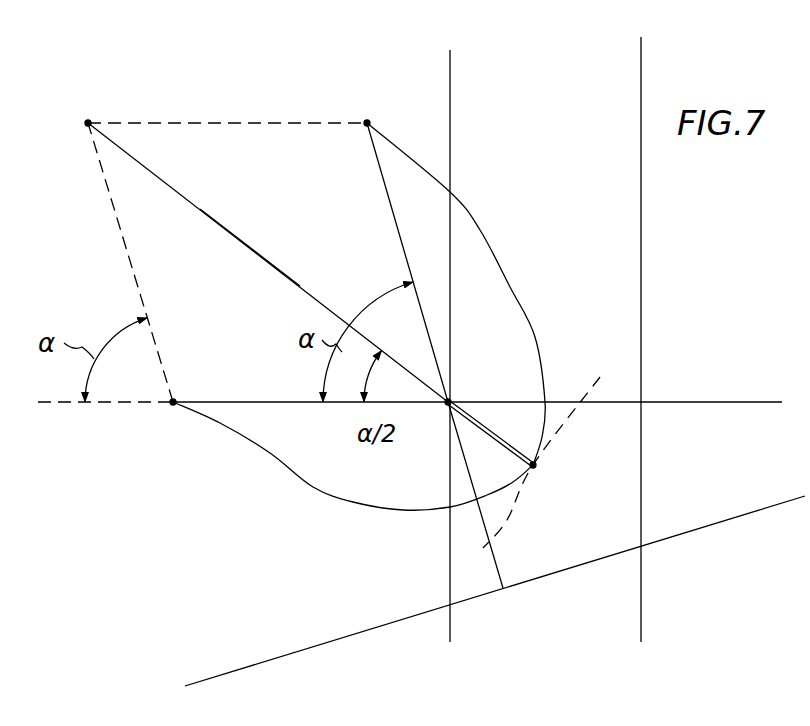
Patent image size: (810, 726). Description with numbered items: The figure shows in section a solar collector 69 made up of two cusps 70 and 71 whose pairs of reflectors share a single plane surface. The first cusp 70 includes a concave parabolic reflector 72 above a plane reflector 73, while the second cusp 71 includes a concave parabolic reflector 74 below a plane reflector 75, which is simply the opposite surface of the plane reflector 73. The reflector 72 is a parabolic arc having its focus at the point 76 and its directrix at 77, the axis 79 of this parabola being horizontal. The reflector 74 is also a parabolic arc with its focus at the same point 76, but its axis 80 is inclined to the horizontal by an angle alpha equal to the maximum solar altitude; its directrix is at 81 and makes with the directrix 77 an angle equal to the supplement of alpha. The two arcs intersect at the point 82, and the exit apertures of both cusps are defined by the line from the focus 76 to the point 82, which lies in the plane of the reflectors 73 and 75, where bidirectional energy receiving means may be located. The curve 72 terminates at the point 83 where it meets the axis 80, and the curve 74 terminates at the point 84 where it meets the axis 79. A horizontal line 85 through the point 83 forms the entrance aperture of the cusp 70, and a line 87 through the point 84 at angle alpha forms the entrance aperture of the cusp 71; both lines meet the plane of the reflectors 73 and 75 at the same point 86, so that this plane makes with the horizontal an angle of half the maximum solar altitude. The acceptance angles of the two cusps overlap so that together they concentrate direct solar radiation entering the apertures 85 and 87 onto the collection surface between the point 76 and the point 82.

The collector 69 is at (158, 77).
The cusp 70 is at (260, 147).
The cusp 71 is at (146, 242).
The concave parabolic reflector 72 is at (482, 232).
The plane reflector 73 is at (252, 249).
The concave parabolic reflector 74 is at (302, 492).
The plane reflector 75 is at (292, 286).
The focus 76 is at (452, 398).
The directrix 77 is at (645, 243).
The axis 79 is at (247, 401).
The axis 80 is at (397, 223).
The directrix 81 is at (598, 566).
The intersection point 82 is at (536, 466).
The terminal point 83 is at (368, 121).
The terminal point 84 is at (171, 404).
The horizontal line 85 is at (198, 122).
The intersection point 86 is at (88, 120).
The inclined line 87 is at (135, 280).